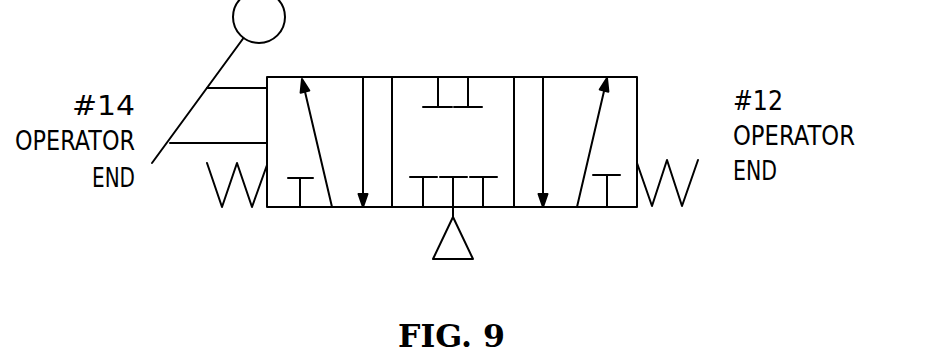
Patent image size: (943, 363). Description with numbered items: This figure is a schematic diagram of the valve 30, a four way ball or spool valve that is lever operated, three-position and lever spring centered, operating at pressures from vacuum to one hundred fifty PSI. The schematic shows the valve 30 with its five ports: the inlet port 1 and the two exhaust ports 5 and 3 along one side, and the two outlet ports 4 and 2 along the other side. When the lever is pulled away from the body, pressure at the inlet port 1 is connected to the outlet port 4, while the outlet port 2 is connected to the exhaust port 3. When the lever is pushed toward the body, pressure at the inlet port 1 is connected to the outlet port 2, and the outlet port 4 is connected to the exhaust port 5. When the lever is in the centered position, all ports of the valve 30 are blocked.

The valve 30 is at (679, 53).
The outlet port 4 is at (424, 57).
The outlet port 2 is at (480, 50).
The exhaust port 5 is at (413, 234).
The exhaust port 3 is at (495, 234).
The inlet port 1 is at (467, 275).